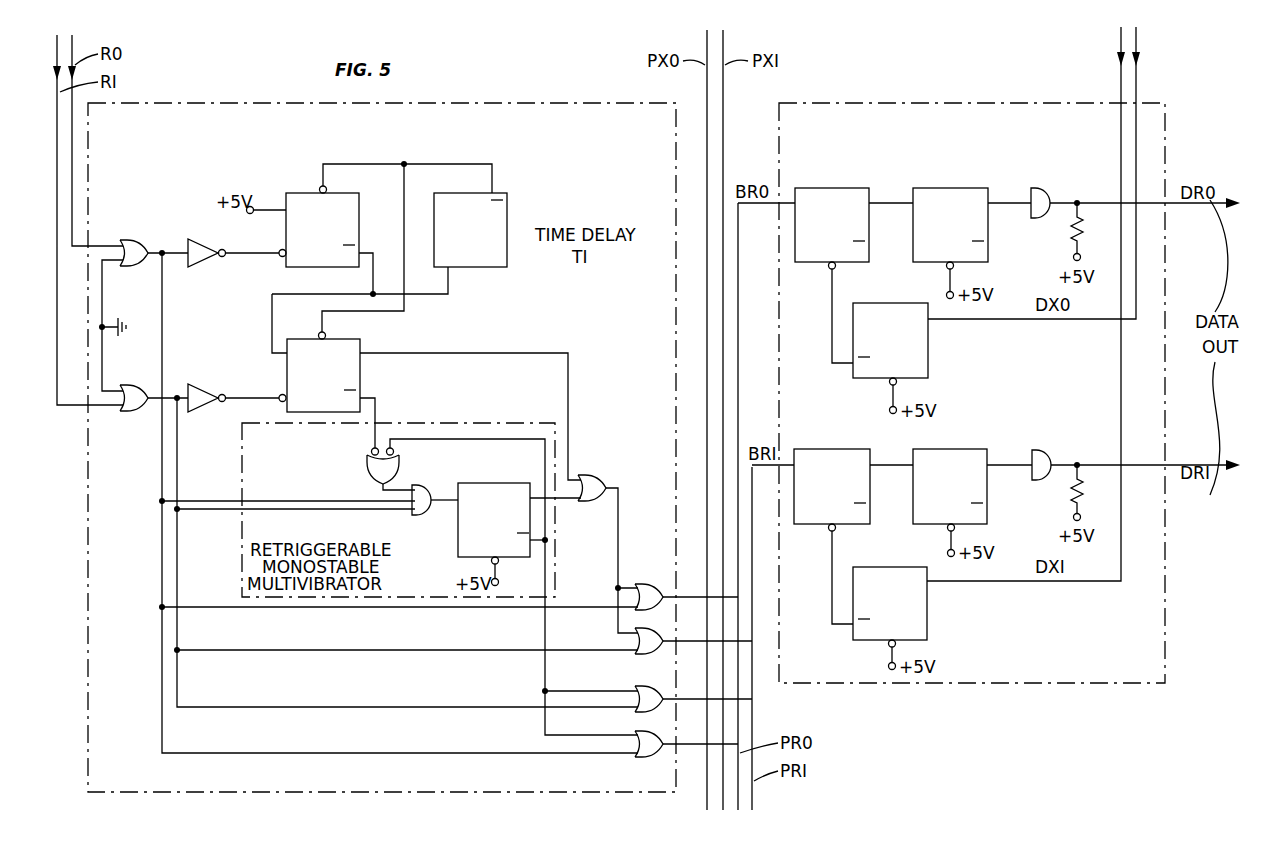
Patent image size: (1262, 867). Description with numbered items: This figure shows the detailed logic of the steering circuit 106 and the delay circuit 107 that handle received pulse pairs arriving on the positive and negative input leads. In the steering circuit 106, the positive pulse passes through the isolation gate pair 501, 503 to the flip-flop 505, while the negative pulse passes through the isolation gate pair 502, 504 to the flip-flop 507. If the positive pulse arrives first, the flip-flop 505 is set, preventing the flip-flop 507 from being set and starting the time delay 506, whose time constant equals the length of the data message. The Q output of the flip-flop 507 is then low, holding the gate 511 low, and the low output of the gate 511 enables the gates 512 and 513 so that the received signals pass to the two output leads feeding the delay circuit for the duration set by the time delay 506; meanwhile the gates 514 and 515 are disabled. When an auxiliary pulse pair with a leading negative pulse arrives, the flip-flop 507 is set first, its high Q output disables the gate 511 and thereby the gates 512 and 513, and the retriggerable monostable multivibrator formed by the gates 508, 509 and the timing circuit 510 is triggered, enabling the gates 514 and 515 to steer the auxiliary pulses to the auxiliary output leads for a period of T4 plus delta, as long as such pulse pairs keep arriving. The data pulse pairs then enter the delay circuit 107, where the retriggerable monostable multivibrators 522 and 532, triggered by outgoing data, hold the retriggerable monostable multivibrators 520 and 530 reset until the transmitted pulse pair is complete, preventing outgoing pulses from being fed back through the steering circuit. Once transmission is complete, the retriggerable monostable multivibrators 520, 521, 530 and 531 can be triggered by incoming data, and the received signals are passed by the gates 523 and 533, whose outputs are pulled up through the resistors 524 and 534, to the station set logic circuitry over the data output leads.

The steering circuit 106 is at (541, 103).
The delay circuit 107 is at (961, 103).
The isolation gate 501 is at (135, 240).
The isolation gate 502 is at (135, 412).
The isolation gate 503 is at (200, 240).
The isolation gate 504 is at (204, 412).
The flip-flop 505 is at (288, 193).
The time delay 506 is at (508, 198).
The flip-flop 507 is at (285, 370).
The gate 508 is at (367, 462).
The gate 509 is at (431, 487).
The timing circuit 510 is at (490, 484).
The gate 511 is at (590, 476).
The gate 512 is at (640, 585).
The gate 513 is at (633, 660).
The gate 514 is at (647, 690).
The gate 515 is at (645, 760).
The retriggerable monostable multivibrator 520 is at (832, 190).
The retriggerable monostable multivibrator 521 is at (948, 190).
The retriggerable monostable multivibrator 522 is at (890, 303).
The gate 523 is at (1046, 189).
The resistor 524 is at (1070, 234).
The retriggerable monostable multivibrator 530 is at (832, 449).
The retriggerable monostable multivibrator 531 is at (950, 449).
The retriggerable monostable multivibrator 532 is at (890, 567).
The gate 533 is at (1046, 450).
The resistor 534 is at (1070, 496).